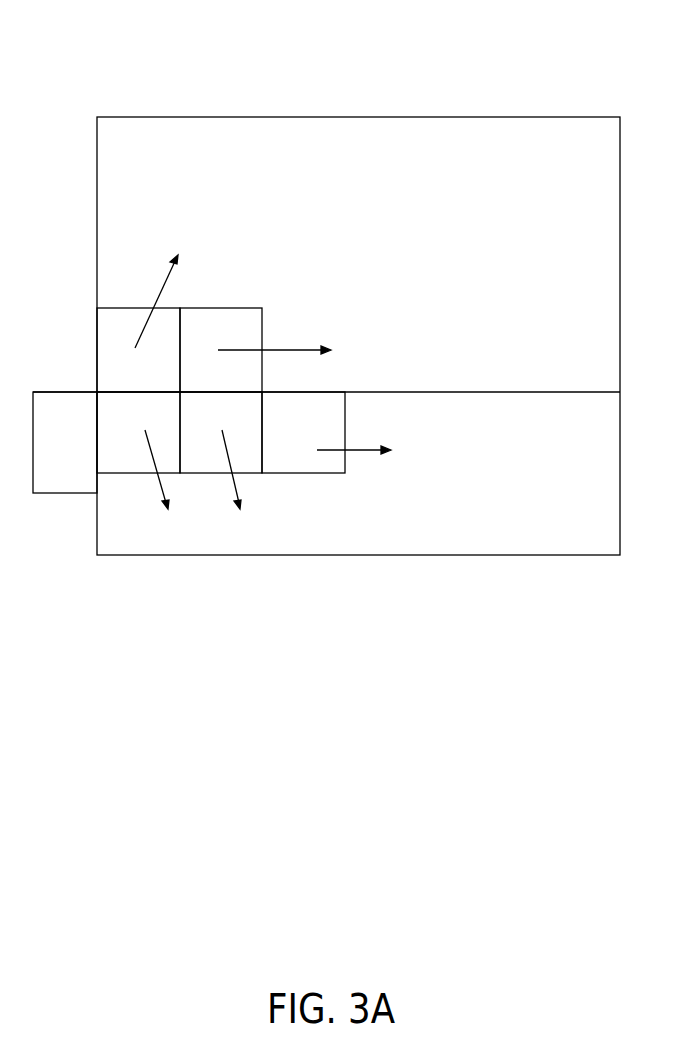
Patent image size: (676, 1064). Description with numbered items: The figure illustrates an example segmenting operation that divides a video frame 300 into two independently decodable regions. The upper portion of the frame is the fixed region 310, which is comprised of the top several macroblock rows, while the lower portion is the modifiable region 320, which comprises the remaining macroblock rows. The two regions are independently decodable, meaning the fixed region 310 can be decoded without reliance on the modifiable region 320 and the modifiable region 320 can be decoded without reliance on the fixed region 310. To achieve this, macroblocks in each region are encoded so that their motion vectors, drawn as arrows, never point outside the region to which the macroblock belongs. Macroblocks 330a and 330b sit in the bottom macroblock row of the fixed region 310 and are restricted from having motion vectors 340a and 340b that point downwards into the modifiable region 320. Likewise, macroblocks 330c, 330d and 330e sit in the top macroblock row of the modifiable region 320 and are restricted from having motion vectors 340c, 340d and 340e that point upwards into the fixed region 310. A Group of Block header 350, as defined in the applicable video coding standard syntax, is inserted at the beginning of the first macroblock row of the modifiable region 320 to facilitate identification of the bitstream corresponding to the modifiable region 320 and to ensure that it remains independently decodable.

The video frame 300 is at (309, 47).
The fixed region 310 is at (527, 224).
The modifiable region 320 is at (522, 501).
The macroblock 330a is at (112, 381).
The macroblock 330b is at (195, 381).
The macroblock 330c is at (112, 424).
The macroblock 330d is at (196, 424).
The macroblock 330e is at (337, 424).
The motion vector 340a is at (141, 301).
The motion vector 340b is at (285, 336).
The motion vector 340c is at (138, 470).
The motion vector 340d is at (261, 469).
The motion vector 340e is at (382, 450).
The Group of Block header 350 is at (91, 422).